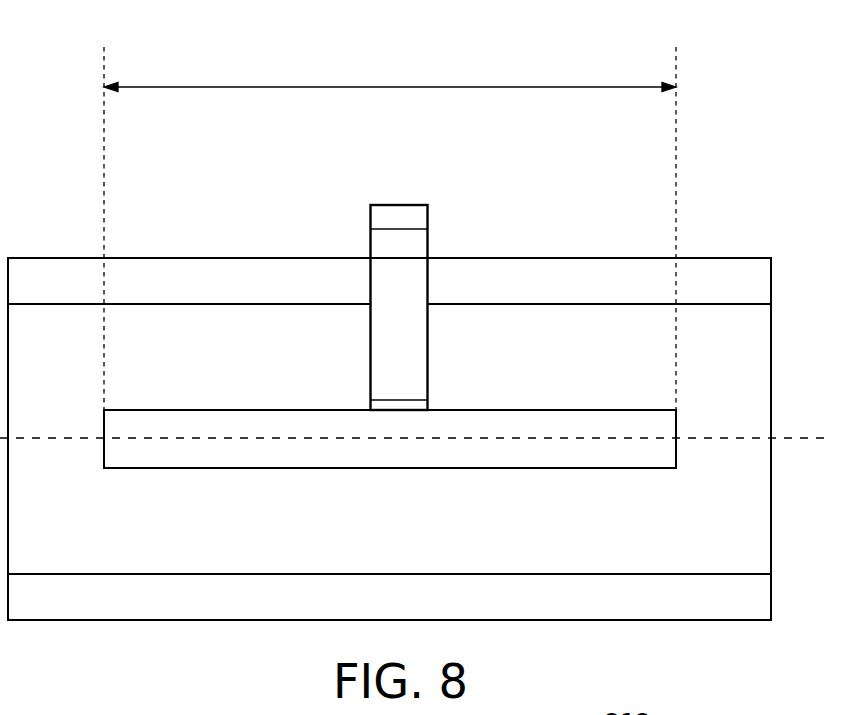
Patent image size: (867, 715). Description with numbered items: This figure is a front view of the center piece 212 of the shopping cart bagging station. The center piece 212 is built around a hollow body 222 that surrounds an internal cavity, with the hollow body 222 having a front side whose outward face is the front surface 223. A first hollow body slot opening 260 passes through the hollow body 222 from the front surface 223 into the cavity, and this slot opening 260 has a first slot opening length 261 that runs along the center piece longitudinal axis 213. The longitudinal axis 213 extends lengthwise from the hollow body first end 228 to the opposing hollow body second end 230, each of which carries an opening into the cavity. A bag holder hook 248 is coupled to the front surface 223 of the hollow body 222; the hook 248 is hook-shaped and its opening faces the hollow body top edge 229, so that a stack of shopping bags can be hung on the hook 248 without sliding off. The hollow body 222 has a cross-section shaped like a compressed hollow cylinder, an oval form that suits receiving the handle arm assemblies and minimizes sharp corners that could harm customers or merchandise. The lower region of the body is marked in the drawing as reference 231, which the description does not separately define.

The center piece 212 is at (301, 206).
The center piece longitudinal axis 213 is at (786, 441).
The hollow body 222 is at (741, 409).
The front surface 223 is at (409, 538).
The hollow body first end 228 is at (7, 250).
The hollow body top edge 229 is at (183, 257).
The hollow body second end 230 is at (771, 250).
The bottom surface 231 is at (173, 622).
The bag holder hook 248 is at (410, 218).
The first hollow body slot opening 260 is at (528, 435).
The first slot opening length 261 is at (237, 86).